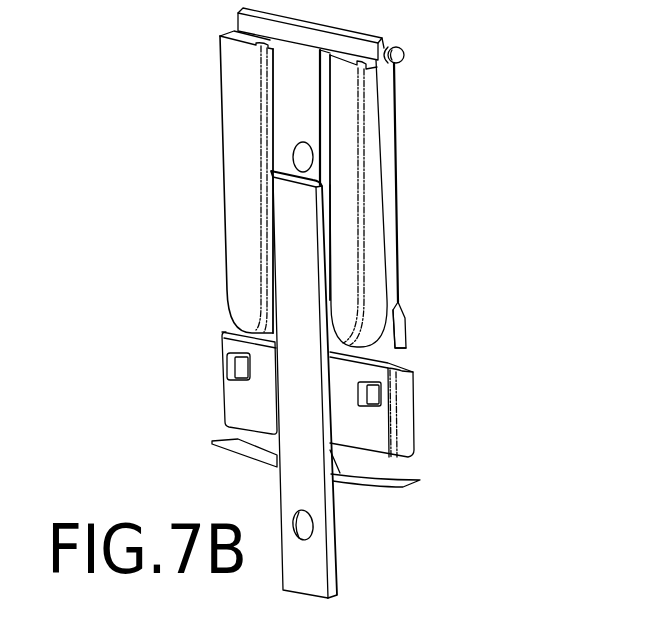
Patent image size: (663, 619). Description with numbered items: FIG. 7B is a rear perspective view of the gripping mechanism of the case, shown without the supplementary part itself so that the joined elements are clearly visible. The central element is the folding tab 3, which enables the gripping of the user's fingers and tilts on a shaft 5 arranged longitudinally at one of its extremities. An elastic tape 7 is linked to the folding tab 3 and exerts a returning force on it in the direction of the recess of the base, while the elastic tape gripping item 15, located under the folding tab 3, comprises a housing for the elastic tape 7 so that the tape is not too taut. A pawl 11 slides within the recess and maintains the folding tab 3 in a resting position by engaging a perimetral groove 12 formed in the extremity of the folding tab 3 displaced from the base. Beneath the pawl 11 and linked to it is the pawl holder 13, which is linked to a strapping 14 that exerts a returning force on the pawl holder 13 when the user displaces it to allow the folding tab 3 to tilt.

The folding tab 3 is at (387, 183).
The shaft 5 is at (404, 53).
The elastic tape 7 is at (318, 552).
The pawl 11 is at (405, 333).
The perimetral groove 12 is at (360, 314).
The pawl holder 13 is at (400, 410).
The strapping 14 is at (378, 483).
The elastic tape gripping item 15 is at (247, 225).